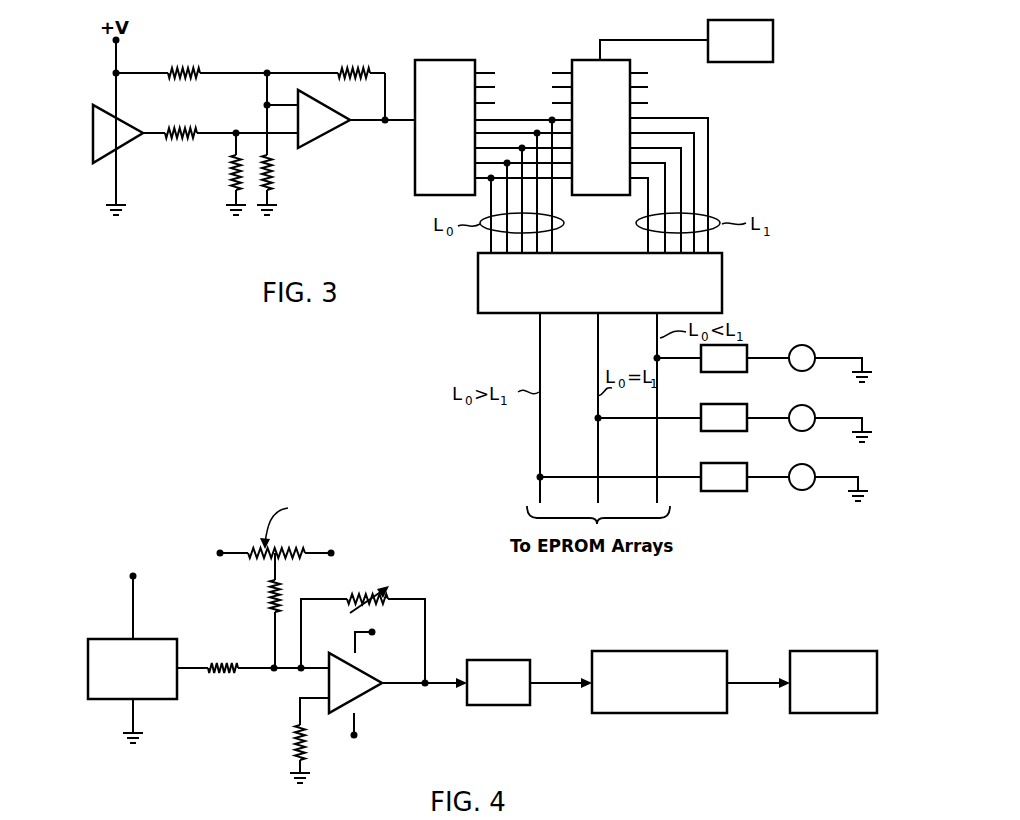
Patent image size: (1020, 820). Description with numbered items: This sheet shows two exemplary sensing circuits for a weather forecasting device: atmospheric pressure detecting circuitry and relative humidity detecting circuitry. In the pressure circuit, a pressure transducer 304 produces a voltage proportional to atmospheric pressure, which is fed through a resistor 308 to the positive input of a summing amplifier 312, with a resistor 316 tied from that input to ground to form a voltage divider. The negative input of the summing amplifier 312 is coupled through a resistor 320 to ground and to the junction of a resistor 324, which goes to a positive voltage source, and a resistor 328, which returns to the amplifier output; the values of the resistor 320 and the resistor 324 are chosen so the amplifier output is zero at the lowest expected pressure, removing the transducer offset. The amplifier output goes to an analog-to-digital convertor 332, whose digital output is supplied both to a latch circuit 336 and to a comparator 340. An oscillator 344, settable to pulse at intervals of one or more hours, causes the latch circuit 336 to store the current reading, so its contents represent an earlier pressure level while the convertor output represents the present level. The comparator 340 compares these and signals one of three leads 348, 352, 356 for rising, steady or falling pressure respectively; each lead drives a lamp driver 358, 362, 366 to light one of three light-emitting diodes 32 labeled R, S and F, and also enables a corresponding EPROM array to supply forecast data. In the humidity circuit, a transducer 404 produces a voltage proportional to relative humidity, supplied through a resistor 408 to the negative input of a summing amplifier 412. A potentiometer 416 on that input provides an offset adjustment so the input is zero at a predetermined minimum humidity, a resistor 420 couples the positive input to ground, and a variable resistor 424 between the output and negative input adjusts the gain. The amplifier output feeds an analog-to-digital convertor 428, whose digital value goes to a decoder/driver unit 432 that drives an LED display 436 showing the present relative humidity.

In FIG. 3, the light-emitting diodes 32 is at (811, 348).
In FIG. 3, the pressure transducer 304 is at (93, 142).
In FIG. 3, the resistor 308 is at (178, 128).
In FIG. 3, the summing amplifier 312 is at (331, 143).
In FIG. 3, the resistor 316 is at (228, 173).
In FIG. 3, the resistor 320 is at (276, 180).
In FIG. 3, the resistor 324 is at (180, 67).
In FIG. 3, the resistor 328 is at (358, 67).
In FIG. 3, the analog-to-digital convertor 332 is at (455, 60).
In FIG. 3, the latch circuit 336 is at (580, 60).
In FIG. 3, the comparator 340 is at (722, 282).
In FIG. 3, the oscillator 344 is at (774, 42).
In FIG. 3, the lead 348 is at (540, 438).
In FIG. 3, the lead 352 is at (598, 350).
In FIG. 3, the lead 356 is at (657, 330).
In FIG. 3, the lamp driver 358 is at (716, 491).
In FIG. 3, the lamp driver 362 is at (716, 431).
In FIG. 3, the lamp driver 366 is at (714, 372).
In FIG. 4, the transducer 404 is at (177, 697).
In FIG. 4, the resistor 408 is at (240, 634).
In FIG. 4, the summing amplifier 412 is at (370, 692).
In FIG. 4, the potentiometer 416 is at (275, 582).
In FIG. 4, the resistor 420 is at (296, 742).
In FIG. 4, the variable resistor 424 is at (366, 590).
In FIG. 4, the analog-to-digital convertor 428 is at (498, 705).
In FIG. 4, the decoder/driver unit 432 is at (645, 713).
In FIG. 4, the LED display 436 is at (820, 713).